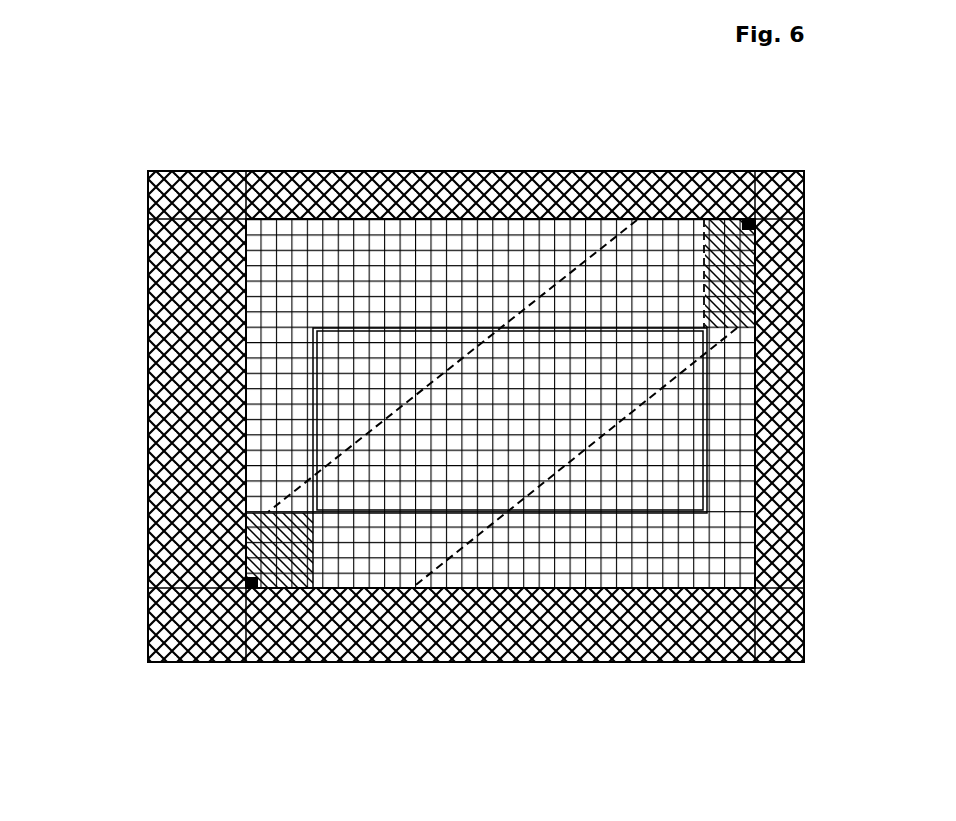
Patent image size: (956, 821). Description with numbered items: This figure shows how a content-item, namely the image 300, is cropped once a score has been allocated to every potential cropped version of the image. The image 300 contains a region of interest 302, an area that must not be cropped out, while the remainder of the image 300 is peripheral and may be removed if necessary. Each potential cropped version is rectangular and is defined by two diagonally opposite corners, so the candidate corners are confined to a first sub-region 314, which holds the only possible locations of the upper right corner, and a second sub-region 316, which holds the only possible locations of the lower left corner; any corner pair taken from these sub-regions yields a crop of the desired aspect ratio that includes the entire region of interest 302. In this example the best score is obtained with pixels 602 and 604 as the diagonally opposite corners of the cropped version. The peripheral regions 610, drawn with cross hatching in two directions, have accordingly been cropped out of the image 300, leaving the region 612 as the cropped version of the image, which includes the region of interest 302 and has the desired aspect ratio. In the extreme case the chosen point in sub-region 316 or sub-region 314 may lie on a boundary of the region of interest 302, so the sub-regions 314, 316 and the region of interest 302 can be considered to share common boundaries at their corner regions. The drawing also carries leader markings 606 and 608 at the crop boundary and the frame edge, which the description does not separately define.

The image 300 is at (349, 116).
The region of interest 302 is at (600, 517).
The first sub-region 314 is at (730, 327).
The second sub-region 316 is at (278, 512).
The pixel 602 is at (250, 583).
The pixel 604 is at (748, 222).
The seal boundary 606 is at (755, 662).
The substrate edge region 608 is at (148, 219).
The peripheral regions 610 is at (538, 171).
The region 612 is at (500, 403).